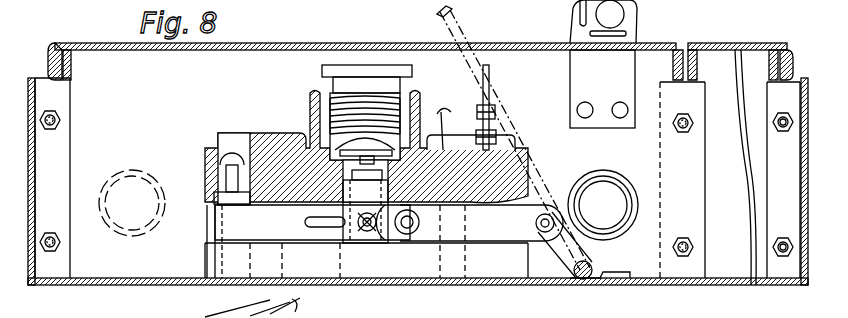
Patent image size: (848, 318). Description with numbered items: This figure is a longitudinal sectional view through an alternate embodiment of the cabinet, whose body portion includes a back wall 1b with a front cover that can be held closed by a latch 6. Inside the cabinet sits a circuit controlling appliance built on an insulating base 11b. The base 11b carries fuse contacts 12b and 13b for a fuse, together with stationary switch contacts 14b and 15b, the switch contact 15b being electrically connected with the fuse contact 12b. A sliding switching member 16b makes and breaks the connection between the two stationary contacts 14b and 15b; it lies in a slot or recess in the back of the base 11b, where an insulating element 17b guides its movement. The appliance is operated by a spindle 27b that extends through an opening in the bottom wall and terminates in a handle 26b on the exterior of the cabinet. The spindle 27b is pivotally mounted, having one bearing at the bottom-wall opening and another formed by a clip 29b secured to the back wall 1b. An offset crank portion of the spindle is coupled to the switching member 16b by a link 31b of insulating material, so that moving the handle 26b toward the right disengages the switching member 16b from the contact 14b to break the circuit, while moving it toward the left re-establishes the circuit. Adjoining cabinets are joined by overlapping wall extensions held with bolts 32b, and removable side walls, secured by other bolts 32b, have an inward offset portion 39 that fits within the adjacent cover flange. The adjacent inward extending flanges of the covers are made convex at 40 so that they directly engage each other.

The back wall 1b is at (418, 164).
The latch 6 is at (632, 13).
The insulating base 11b is at (258, 147).
The fuse contact 12b is at (338, 150).
The fuse contact 13b is at (340, 120).
The stationary switch contact 14b is at (230, 235).
The stationary switch contact 15b is at (358, 236).
The sliding switching member 16b is at (300, 232).
The insulating element 17b is at (240, 276).
The handle 26b is at (436, 13).
The spindle 27b is at (556, 244).
The clip 29b is at (602, 277).
The link 31b is at (492, 235).
The bolts 32b is at (58, 120).
The inward offset portion 39 is at (72, 62).
The convex flanges 40 is at (49, 62).